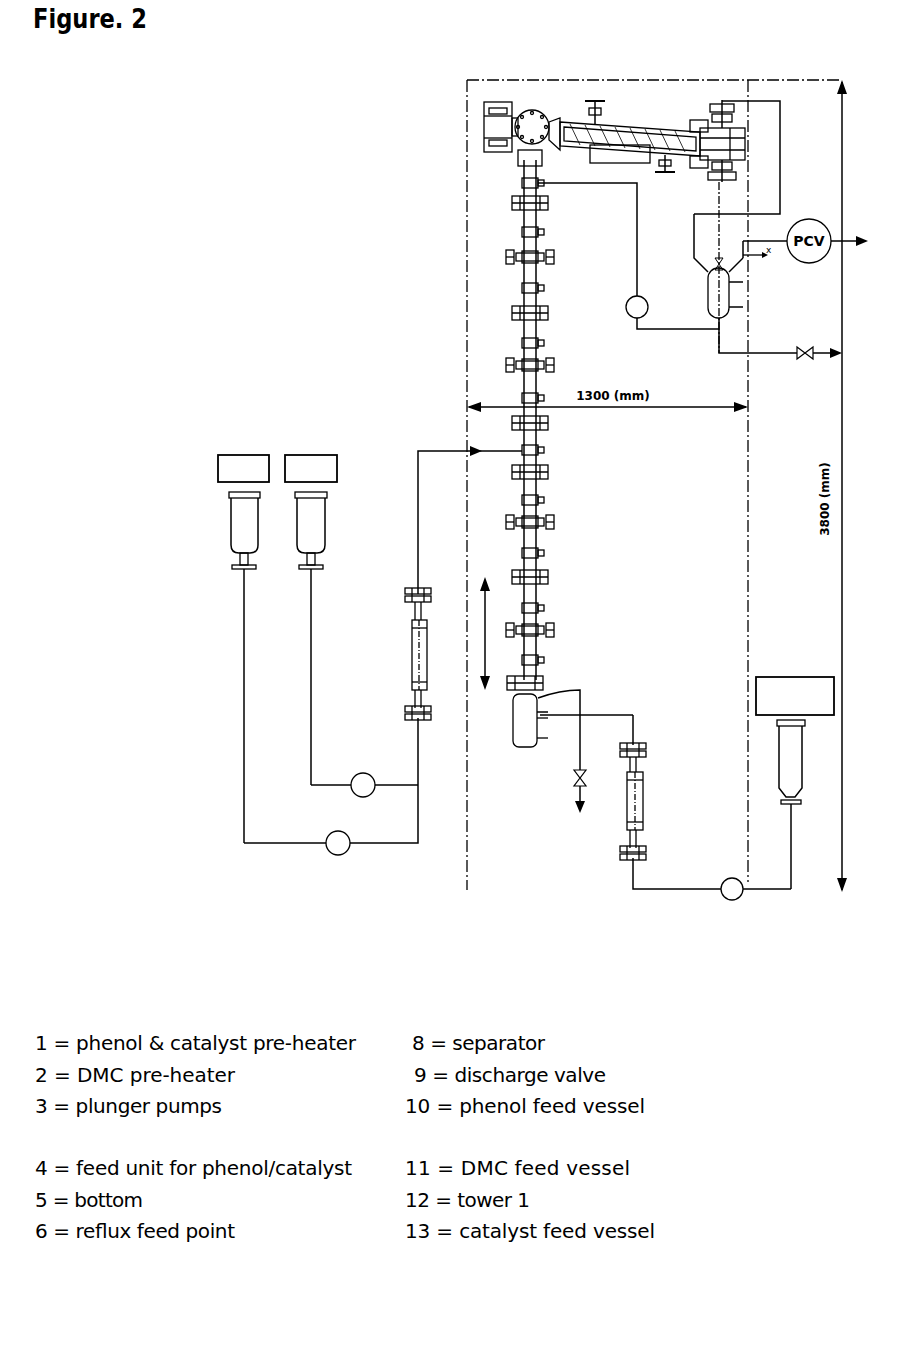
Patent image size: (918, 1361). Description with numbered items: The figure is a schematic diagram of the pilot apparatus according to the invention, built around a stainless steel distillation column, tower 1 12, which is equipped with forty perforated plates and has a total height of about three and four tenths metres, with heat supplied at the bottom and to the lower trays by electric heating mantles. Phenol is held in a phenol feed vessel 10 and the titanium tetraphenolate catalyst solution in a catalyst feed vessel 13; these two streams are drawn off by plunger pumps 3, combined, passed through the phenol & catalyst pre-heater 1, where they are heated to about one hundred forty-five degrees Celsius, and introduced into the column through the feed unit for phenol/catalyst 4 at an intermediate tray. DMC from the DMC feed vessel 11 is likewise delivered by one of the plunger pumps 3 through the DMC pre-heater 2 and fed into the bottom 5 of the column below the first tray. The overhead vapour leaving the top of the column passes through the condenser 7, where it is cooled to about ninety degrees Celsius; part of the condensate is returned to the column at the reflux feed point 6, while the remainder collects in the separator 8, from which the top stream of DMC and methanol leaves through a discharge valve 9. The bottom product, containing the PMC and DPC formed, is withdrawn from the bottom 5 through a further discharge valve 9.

The phenol & catalyst pre-heater 1 is at (405, 654).
The DMC pre-heater 2 is at (645, 787).
The plunger pumps 3 is at (517, 603).
The feed unit for phenol/catalyst 4 is at (493, 517).
The bottom 5 is at (521, 733).
The reflux feed point 6 is at (565, 235).
The condenser 7 is at (614, 141).
The separator 8 is at (712, 267).
The discharge valve 9 is at (690, 565).
The phenol feed vessel 10 is at (230, 649).
The DMC feed vessel 11 is at (795, 783).
The tower 1 12 is at (517, 420).
The catalyst feed vessel 13 is at (324, 620).